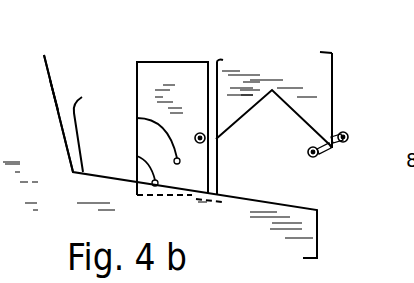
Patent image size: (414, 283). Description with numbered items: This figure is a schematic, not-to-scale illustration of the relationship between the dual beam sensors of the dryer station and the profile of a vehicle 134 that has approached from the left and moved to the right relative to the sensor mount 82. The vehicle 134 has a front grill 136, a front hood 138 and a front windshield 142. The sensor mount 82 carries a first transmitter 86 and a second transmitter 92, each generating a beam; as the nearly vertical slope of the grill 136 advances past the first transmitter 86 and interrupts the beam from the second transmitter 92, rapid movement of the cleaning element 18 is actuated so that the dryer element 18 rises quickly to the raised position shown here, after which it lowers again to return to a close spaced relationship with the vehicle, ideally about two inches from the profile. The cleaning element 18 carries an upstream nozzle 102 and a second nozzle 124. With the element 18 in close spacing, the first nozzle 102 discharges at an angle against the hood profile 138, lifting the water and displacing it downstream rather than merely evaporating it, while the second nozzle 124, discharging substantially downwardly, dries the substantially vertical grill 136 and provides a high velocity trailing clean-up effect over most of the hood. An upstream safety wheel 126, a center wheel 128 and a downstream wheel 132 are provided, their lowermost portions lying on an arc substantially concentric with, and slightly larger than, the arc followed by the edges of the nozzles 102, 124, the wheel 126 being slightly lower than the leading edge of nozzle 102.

The cleaning element 18 is at (334, 55).
The sensor mount 82 is at (173, 68).
The first transmitter 86 is at (137, 156).
The second transmitter 92 is at (137, 119).
The upstream nozzle 102 is at (207, 141).
The second nozzle 124 is at (333, 148).
The upstream safety wheel 126 is at (201, 143).
The center wheel 128 is at (312, 157).
The downstream wheel 132 is at (341, 131).
The vehicle 134 is at (44, 55).
The front grill 136 is at (318, 236).
The front hood 138 is at (99, 131).
The front windshield 142 is at (54, 90).